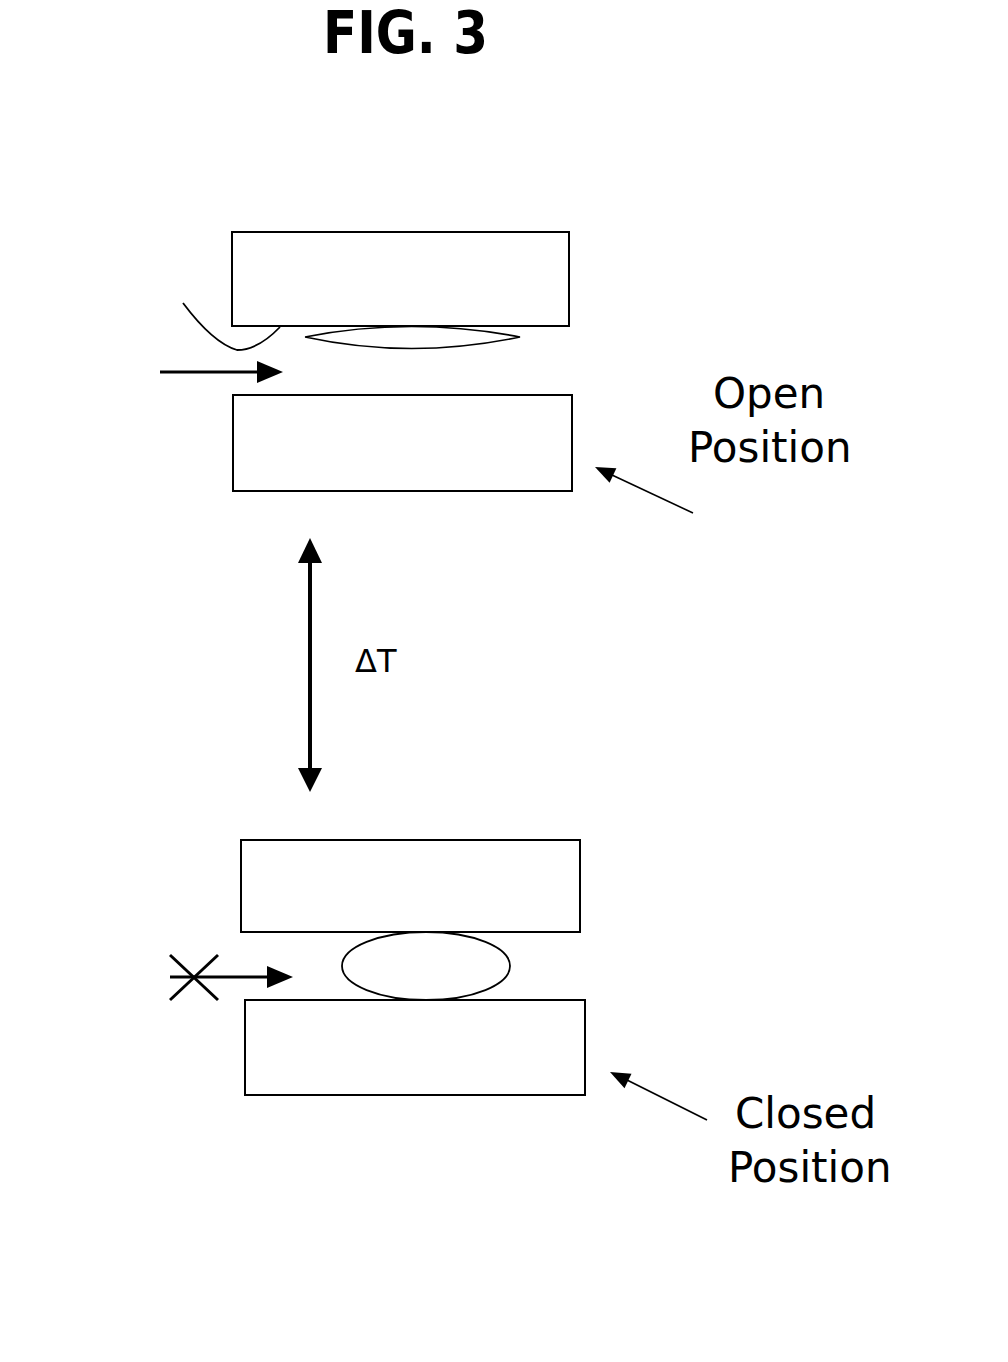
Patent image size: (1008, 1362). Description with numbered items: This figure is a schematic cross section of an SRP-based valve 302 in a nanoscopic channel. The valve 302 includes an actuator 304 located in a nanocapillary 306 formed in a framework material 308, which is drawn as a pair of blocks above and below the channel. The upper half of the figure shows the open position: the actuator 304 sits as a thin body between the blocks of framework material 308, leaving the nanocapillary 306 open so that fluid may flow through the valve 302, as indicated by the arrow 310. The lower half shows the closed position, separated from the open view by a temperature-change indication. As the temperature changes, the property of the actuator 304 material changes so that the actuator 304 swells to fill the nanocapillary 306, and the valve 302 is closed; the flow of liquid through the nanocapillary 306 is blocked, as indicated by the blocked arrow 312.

The valve 302 is at (337, 314).
The actuator 304 is at (520, 337).
The nanocapillary 306 is at (205, 309).
The framework material 308 is at (523, 247).
The arrow 310 is at (187, 380).
The blocked arrow 312 is at (162, 990).